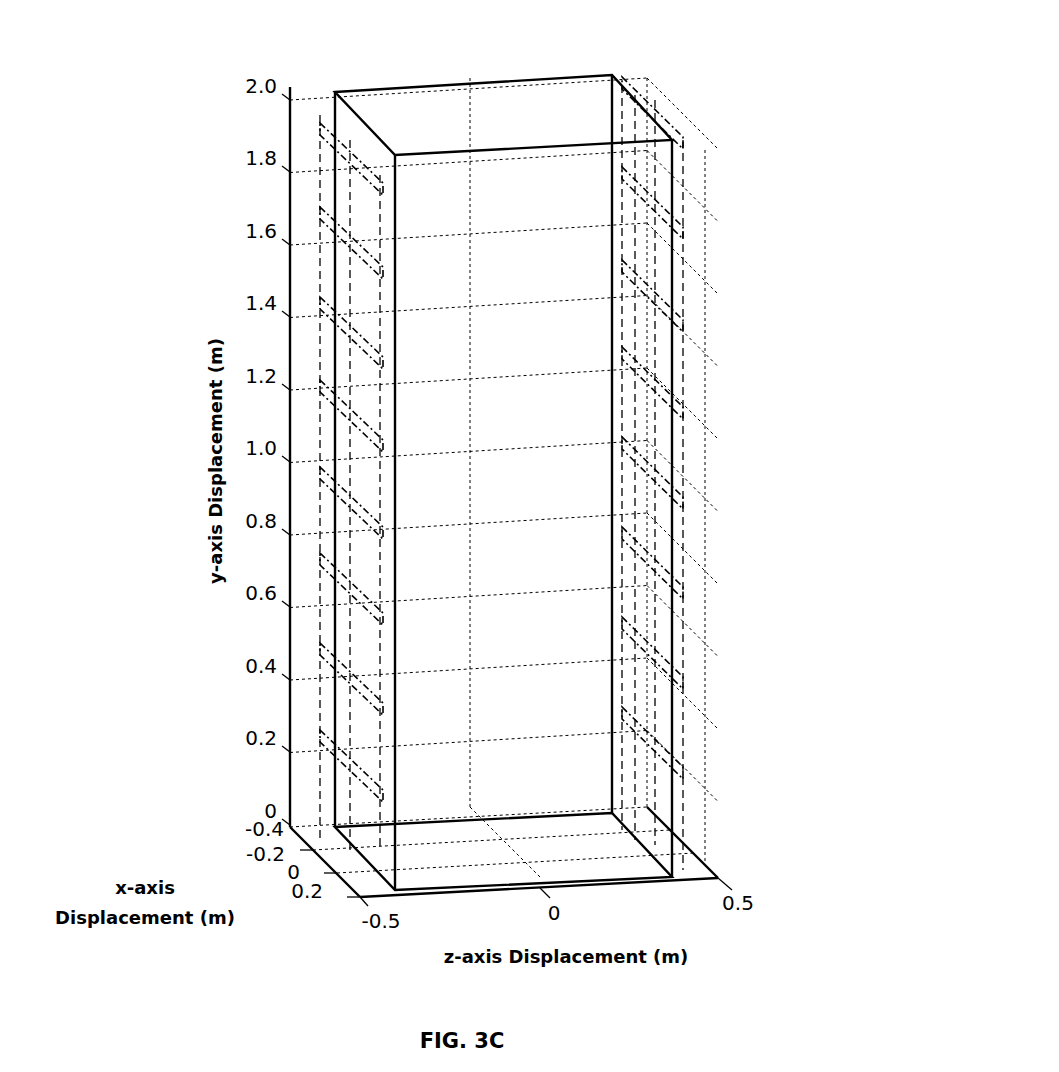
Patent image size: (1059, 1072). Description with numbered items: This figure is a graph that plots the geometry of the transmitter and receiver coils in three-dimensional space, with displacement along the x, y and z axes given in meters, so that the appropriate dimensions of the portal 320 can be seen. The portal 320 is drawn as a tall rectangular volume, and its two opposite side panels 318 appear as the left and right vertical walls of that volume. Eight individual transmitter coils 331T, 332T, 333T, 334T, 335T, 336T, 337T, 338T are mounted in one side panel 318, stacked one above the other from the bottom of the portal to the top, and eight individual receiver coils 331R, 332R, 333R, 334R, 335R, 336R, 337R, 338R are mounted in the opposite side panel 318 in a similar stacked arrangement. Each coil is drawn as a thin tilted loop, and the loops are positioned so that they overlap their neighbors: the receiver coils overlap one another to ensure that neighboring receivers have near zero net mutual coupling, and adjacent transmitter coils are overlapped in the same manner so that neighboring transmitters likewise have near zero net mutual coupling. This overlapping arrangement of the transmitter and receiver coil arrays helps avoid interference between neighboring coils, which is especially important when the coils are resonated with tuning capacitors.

The side panels 318 is at (343, 115).
The portal 320 is at (515, 103).
The transmitter coil 331T is at (325, 766).
The transmitter coil 332T is at (325, 688).
The transmitter coil 333T is at (325, 613).
The transmitter coil 334T is at (325, 550).
The transmitter coil 335T is at (320, 420).
The transmitter coil 336T is at (332, 322).
The transmitter coil 337T is at (332, 252).
The transmitter coil 338T is at (325, 178).
The receiver coil 331R is at (650, 810).
The receiver coil 332R is at (652, 710).
The receiver coil 333R is at (652, 633).
The receiver coil 334R is at (652, 530).
The receiver coil 335R is at (652, 433).
The receiver coil 336R is at (652, 330).
The receiver coil 337R is at (652, 256).
The receiver coil 338R is at (658, 168).